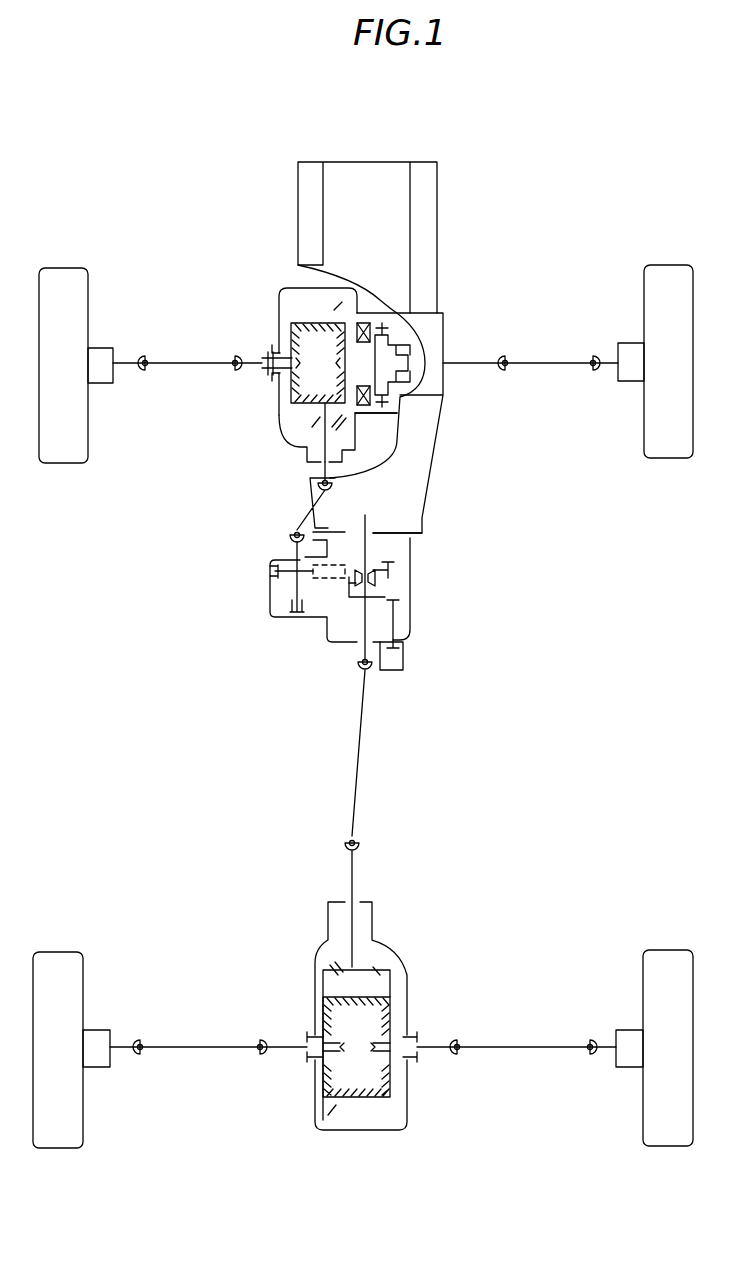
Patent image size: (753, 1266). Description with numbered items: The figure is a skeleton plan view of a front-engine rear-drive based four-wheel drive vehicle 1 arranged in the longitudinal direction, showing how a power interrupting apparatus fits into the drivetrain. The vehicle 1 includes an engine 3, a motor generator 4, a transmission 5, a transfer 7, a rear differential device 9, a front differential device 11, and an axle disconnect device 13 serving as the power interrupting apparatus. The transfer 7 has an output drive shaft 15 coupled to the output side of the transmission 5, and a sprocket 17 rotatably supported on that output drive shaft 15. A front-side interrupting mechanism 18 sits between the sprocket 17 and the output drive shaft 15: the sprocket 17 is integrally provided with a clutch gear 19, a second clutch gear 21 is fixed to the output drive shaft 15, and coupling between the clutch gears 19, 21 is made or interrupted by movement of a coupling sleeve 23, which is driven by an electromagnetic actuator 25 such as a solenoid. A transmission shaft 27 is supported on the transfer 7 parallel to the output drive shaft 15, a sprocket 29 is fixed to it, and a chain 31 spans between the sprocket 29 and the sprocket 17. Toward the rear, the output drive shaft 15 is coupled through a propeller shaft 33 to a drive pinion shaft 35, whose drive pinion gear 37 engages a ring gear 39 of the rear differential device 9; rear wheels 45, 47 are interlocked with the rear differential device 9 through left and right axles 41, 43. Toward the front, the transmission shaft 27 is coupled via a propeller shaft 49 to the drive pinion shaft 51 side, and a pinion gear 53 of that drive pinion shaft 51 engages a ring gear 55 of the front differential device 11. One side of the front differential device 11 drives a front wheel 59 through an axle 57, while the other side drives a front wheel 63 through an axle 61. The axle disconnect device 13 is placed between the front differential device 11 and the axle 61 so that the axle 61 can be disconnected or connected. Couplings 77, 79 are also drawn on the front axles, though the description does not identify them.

The four-wheel drive vehicle 1 is at (517, 155).
The engine 3 is at (400, 209).
The motor generator 4 is at (445, 335).
The transmission 5 is at (426, 439).
The transfer 7 is at (429, 568).
The rear differential device 9 is at (403, 997).
The front differential device 11 is at (282, 320).
The axle disconnect device 13 is at (420, 334).
The output drive shaft 15 is at (372, 520).
The sprocket 17 is at (392, 548).
The front-side interrupting mechanism 18 is at (411, 581).
The clutch gear 19 is at (397, 592).
The clutch gear 21 is at (335, 598).
The coupling sleeve 23 is at (410, 618).
The electromagnetic actuator 25 is at (405, 655).
The transmission shaft 27 is at (272, 594).
The sprocket 29 is at (282, 569).
The chain 31 is at (327, 597).
The propeller shaft 33 is at (358, 757).
The drive pinion shaft 35 is at (355, 880).
The drive pinion gear 37 is at (385, 968).
The ring gear 39 is at (318, 975).
The axle 41 is at (205, 1040).
The axle 43 is at (530, 1040).
The rear wheel 45 is at (62, 952).
The rear wheel 47 is at (668, 952).
The propeller shaft 49 is at (295, 524).
The drive pinion shaft 51 is at (303, 445).
The pinion gear 53 is at (282, 421).
The ring gear 55 is at (400, 416).
The axle 57 is at (189, 355).
The front wheel 59 is at (62, 265).
The axle 61 is at (572, 352).
The front wheel 63 is at (663, 262).
The coupling 77 is at (262, 352).
The coupling 79 is at (463, 362).